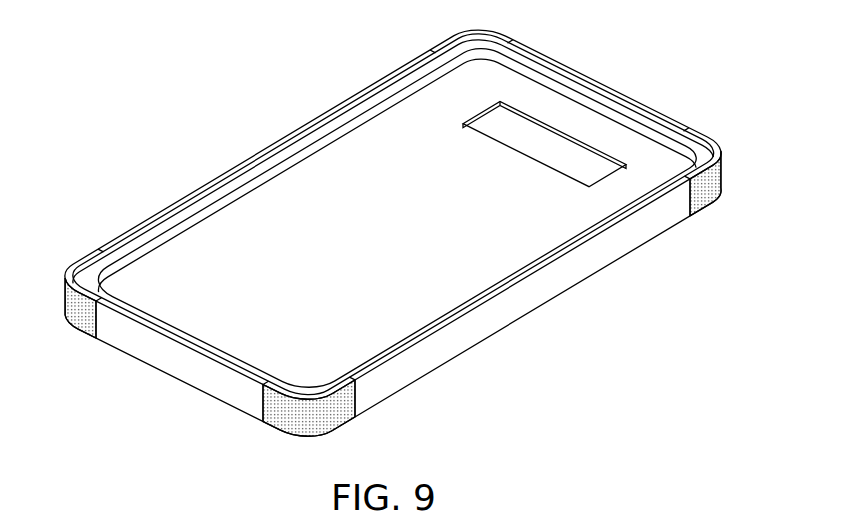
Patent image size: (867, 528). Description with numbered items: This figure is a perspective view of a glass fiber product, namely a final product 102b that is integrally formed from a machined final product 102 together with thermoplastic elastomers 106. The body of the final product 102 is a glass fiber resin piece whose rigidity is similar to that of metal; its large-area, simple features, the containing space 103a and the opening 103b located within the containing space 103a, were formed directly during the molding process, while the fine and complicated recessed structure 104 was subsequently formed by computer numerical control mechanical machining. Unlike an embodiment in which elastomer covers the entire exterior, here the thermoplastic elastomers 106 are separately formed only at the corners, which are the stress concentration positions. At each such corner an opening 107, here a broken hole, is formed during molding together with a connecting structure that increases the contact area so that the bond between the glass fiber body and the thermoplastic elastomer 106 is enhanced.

The final product 102 is at (292, 205).
The final product 102b is at (638, 62).
The containing space 103a is at (406, 203).
The opening 103b is at (505, 147).
The recessed structure 104 is at (183, 235).
The thermoplastic elastomer 106 is at (705, 190).
The opening 107 is at (688, 195).